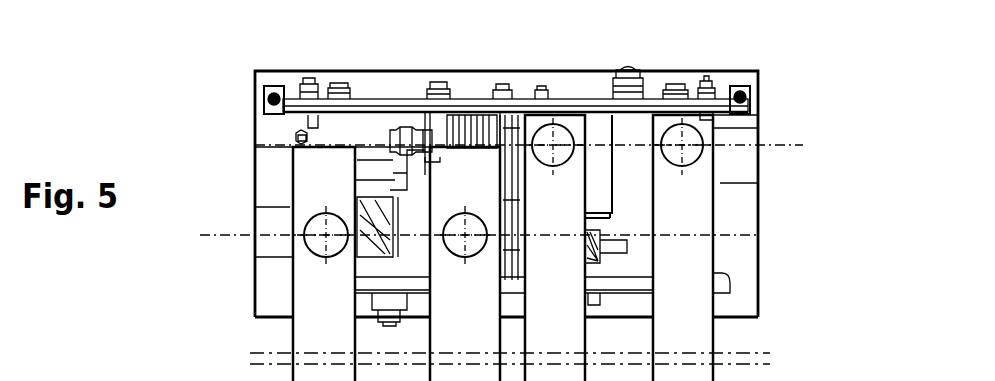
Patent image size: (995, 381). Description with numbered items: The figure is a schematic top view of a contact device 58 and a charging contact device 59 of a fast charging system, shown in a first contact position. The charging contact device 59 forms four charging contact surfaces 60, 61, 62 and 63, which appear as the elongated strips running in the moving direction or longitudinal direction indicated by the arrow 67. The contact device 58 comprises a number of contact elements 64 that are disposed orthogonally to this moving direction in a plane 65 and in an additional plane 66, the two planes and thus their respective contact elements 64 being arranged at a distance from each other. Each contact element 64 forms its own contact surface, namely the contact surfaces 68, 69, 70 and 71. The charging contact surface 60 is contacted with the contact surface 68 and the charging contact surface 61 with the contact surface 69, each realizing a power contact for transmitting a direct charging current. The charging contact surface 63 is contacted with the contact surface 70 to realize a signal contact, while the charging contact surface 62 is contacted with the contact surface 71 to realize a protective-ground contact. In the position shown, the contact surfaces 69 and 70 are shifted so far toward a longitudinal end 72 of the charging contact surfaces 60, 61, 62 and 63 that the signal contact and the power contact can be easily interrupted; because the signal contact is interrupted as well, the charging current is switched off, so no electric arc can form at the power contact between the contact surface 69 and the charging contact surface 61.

The contact device 58 is at (302, 65).
The charging contact device 59 is at (270, 380).
The charging contact surface 60 is at (313, 182).
The charging contact surface 61 is at (690, 222).
The charging contact surface 62 is at (442, 170).
The charging contact surface 63 is at (590, 170).
The contact elements 64 is at (700, 112).
The plane 65 is at (803, 145).
The additional plane 66 is at (213, 237).
The arrow 67 is at (813, 327).
The contact surface 68 is at (318, 228).
The contact surface 69 is at (760, 88).
The contact surface 70 is at (577, 175).
The contact surface 71 is at (474, 225).
The longitudinal end 72 is at (277, 150).